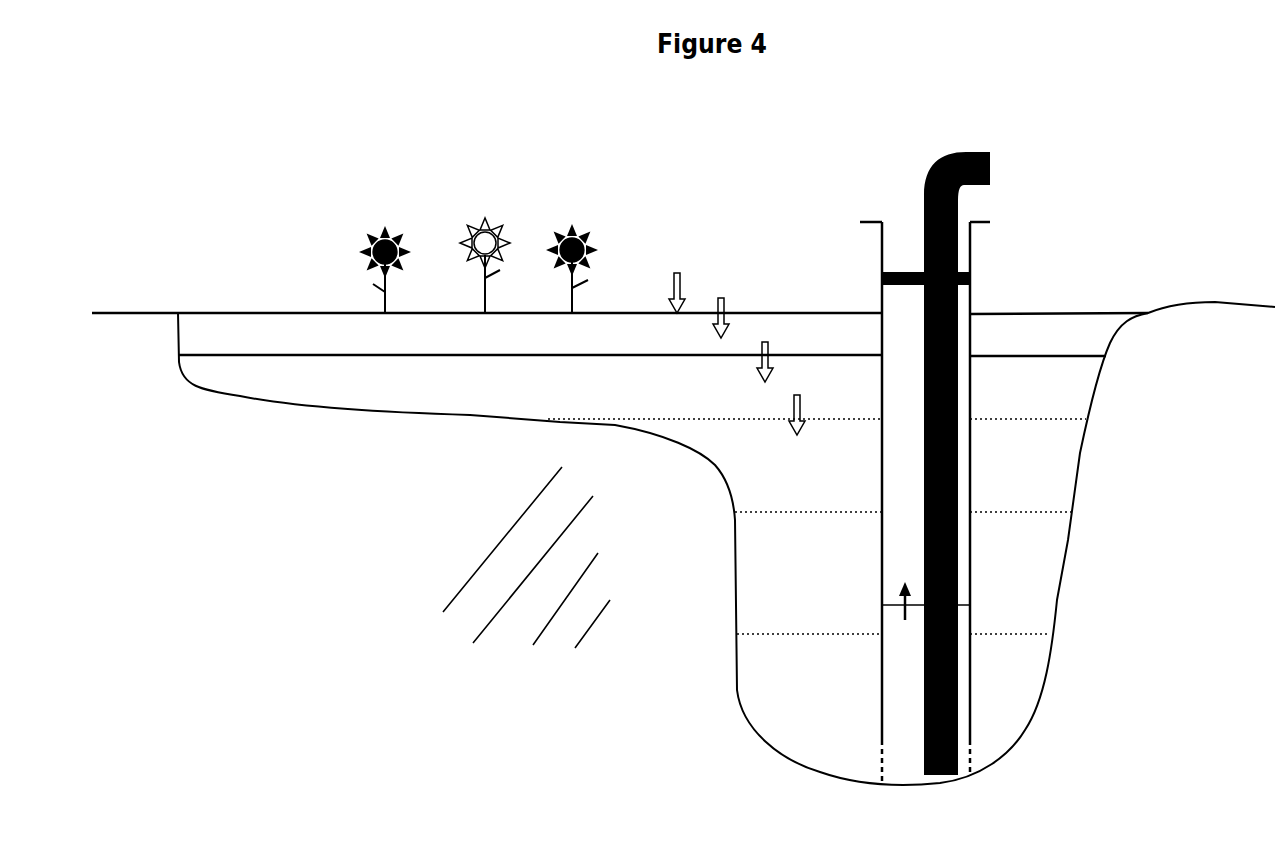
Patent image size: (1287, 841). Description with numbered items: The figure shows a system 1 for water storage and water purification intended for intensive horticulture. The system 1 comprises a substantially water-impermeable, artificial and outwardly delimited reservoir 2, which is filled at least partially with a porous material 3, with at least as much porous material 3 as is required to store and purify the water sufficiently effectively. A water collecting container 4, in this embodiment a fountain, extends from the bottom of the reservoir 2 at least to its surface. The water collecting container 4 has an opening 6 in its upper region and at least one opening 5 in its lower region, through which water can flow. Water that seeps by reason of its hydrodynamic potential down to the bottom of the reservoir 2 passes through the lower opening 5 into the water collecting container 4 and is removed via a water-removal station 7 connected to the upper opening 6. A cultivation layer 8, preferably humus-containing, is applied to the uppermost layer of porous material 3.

The system for water storage and water purification 1 is at (244, 204).
The reservoir 2 is at (1080, 453).
The porous material 3 is at (1043, 548).
The water collecting container 4 is at (970, 380).
The opening in the lower region 5 is at (972, 755).
The opening in the upper region 6 is at (995, 223).
The water-removal station 7 is at (992, 165).
The cultivation layer 8 is at (1095, 335).